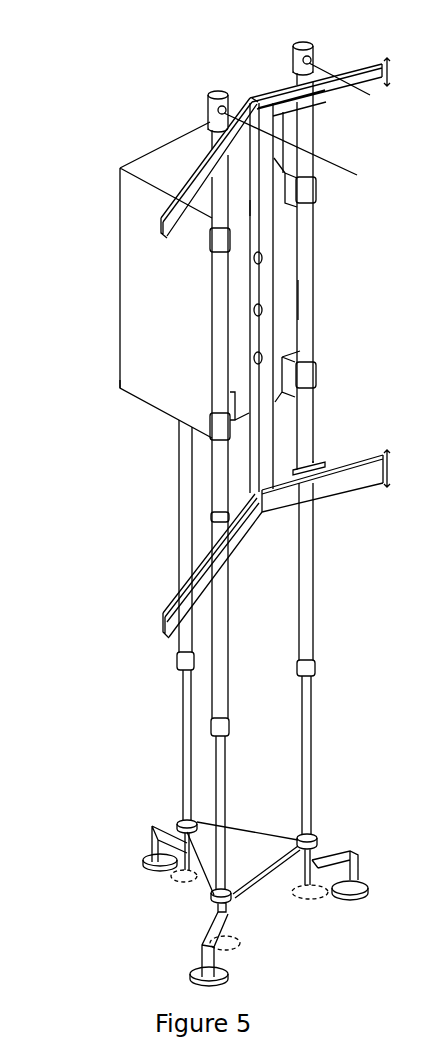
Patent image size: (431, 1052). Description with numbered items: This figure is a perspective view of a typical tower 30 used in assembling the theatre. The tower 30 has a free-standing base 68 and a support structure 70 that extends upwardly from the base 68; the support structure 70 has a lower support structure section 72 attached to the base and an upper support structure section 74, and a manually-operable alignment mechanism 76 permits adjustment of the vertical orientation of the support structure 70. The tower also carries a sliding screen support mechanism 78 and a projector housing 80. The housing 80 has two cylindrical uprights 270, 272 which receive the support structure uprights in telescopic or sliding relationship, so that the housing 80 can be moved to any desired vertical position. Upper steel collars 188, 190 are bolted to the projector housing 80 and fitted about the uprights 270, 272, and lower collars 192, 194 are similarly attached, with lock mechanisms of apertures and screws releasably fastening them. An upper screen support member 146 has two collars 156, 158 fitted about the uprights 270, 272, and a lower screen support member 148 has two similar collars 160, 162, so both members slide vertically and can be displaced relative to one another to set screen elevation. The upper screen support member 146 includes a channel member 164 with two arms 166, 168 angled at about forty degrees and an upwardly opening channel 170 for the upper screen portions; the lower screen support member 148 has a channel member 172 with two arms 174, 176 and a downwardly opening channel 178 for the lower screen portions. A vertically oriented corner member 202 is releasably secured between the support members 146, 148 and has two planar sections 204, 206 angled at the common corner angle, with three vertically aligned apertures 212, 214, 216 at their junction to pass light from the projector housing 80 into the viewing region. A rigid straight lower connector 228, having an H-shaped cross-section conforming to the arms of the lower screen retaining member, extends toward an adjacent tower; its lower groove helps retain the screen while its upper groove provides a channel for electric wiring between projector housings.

The tower 30 is at (96, 431).
The free-standing base 68 is at (114, 838).
The support structure 70 is at (267, 637).
The lower support structure section 72 is at (342, 549).
The upper support structure section 74 is at (359, 795).
The manually-operable alignment mechanism 76 is at (348, 837).
The sliding screen support mechanism 78 is at (357, 295).
The projector housing 80 is at (132, 243).
The upper screen support member 146 is at (264, 82).
The lower screen support member 148 is at (251, 543).
The collar 156 is at (319, 44).
The collar 158 is at (218, 106).
The collar 160 is at (329, 474).
The collar 162 is at (208, 524).
The channel member 164 is at (244, 93).
The arm 166 is at (357, 88).
The arm 168 is at (157, 212).
The upwardly opening channel 170 is at (189, 167).
The channel member 172 is at (238, 502).
The arm 174 is at (326, 492).
The arm 176 is at (198, 557).
The downwardly opening channel 178 is at (203, 600).
The upper steel collar 188 is at (325, 180).
The upper steel collar 190 is at (237, 237).
The lower collar 192 is at (323, 378).
The lower collar 194 is at (236, 424).
The corner member 202 is at (268, 281).
The planar section 204 is at (262, 140).
The planar section 206 is at (243, 210).
The aperture 212 is at (263, 257).
The aperture 214 is at (263, 310).
The aperture 216 is at (263, 358).
The lower connector 228 is at (155, 607).
The cylindrical upright 270 is at (322, 141).
The cylindrical upright 272 is at (209, 296).